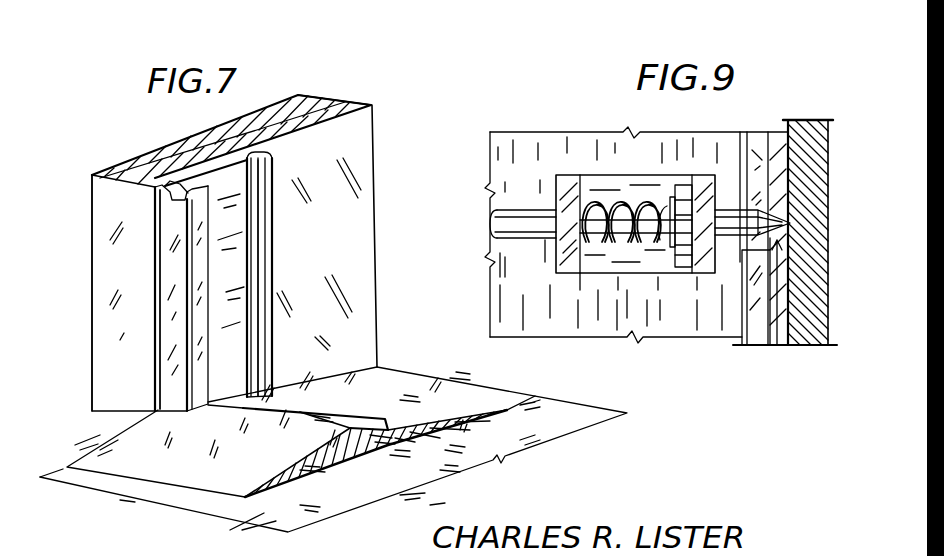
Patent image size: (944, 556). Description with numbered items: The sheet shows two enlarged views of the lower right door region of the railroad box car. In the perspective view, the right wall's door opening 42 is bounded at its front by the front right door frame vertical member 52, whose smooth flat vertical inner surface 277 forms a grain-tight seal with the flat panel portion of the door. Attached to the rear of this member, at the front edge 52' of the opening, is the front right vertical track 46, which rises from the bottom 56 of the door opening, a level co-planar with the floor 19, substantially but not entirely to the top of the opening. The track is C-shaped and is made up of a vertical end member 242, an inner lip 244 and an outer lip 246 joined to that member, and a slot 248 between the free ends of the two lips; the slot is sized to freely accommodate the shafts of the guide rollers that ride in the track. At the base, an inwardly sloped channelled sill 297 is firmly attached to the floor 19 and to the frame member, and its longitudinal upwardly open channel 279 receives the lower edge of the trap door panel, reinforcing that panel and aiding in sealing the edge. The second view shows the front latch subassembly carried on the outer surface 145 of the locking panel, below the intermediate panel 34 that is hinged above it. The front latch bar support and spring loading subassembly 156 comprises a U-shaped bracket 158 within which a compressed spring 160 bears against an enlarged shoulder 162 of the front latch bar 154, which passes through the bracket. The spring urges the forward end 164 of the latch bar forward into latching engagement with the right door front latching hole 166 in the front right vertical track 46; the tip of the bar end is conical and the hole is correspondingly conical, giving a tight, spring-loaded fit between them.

In FIG. 7, the door opening 42 is at (404, 211).
In FIG. 7, the front right door frame vertical member 52 is at (197, 275).
In FIG. 9, the front right door frame vertical member 52 is at (808, 356).
In FIG. 7, the front edge of the door opening 52' is at (359, 121).
In FIG. 7, the vertical end member 242 is at (220, 183).
In FIG. 9, the vertical end member 242 is at (812, 115).
In FIG. 7, the outer lip 246 is at (275, 229).
In FIG. 9, the outer lip 246 is at (753, 310).
In FIG. 7, the slot 248 is at (246, 310).
In FIG. 7, the smooth flat vertical inner surface 277 is at (122, 268).
In FIG. 7, the inner lip 244 is at (175, 307).
In FIG. 9, the inner lip 244 is at (753, 150).
In FIG. 7, the front right vertical track 46 is at (98, 338).
In FIG. 9, the front right vertical track 46 is at (744, 356).
In FIG. 7, the bottom of the right hand door opening 56 is at (384, 372).
In FIG. 7, the longitudinal upwardly open channel 279 is at (418, 445).
In FIG. 7, the inwardly sloped channelled sill 297 is at (223, 480).
In FIG. 7, the floor 19 is at (70, 432).
In FIG. 9, the intermediate panel 34 is at (629, 331).
In FIG. 9, the outer surface 145 is at (531, 197).
In FIG. 9, the front latch bar support and spring loading subassembly 156 is at (578, 161).
In FIG. 9, the forward end of the latch bar 164 is at (722, 205).
In FIG. 9, the front latch bar 154 is at (525, 250).
In FIG. 9, the compressed spring 160 is at (623, 200).
In FIG. 9, the U-shaped bracket 158 is at (623, 262).
In FIG. 9, the enlarged shoulder 162 is at (682, 268).
In FIG. 9, the right door front latching hole 166 is at (762, 305).